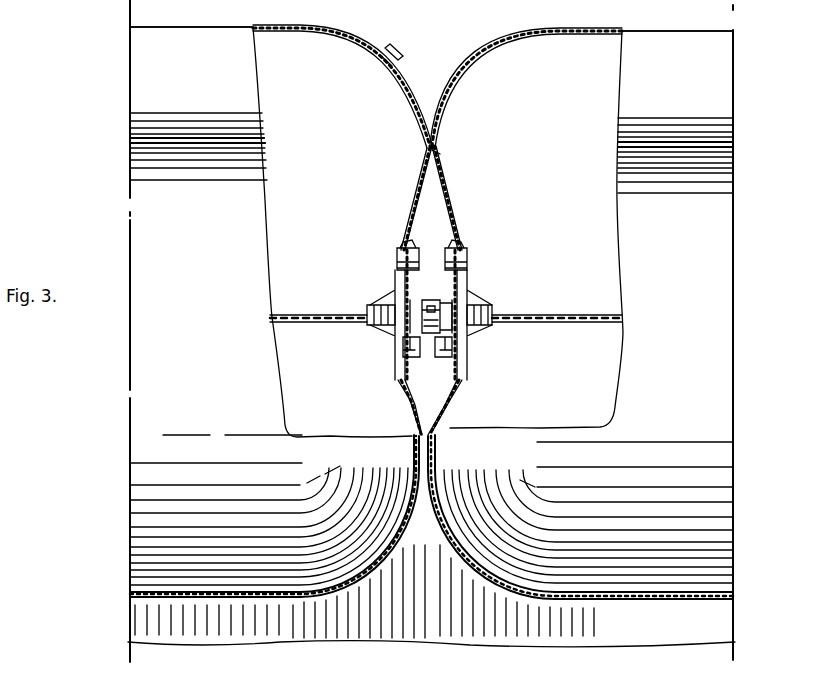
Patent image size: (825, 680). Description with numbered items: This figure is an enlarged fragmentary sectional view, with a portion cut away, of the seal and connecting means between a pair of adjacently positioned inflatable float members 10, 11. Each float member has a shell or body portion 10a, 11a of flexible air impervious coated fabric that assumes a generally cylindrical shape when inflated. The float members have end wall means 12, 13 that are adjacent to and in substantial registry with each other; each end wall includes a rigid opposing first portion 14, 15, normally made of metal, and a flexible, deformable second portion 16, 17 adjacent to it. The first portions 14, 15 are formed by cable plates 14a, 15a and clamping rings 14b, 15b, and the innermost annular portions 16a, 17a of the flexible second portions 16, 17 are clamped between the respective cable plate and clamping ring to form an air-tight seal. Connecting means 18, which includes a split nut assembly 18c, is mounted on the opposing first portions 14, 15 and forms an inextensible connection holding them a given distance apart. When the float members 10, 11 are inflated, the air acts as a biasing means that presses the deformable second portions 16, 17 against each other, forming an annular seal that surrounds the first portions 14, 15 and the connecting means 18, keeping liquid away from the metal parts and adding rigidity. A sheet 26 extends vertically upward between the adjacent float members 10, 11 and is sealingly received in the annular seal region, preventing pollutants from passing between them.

The float member 10 is at (113, 80).
The shell or body portion 10a is at (140, 24).
The float member 11 is at (787, 84).
The shell or body portion 11a is at (712, 32).
The end wall means 12 is at (392, 138).
The end wall means 13 is at (475, 142).
The movable second portion 16 is at (418, 152).
The movable second portion 17 is at (442, 152).
The innermost annular portion 16a is at (398, 252).
The innermost annular portion 17a is at (462, 252).
The first portion 14 is at (397, 289).
The first portion 15 is at (465, 289).
The connecting means 18 is at (424, 276).
The split nut assembly 18c is at (420, 330).
The cable plate 14a is at (405, 381).
The cable plate 15a is at (458, 381).
The clamping ring 14b is at (412, 394).
The clamping ring 15b is at (452, 394).
The sheet 26 is at (440, 625).